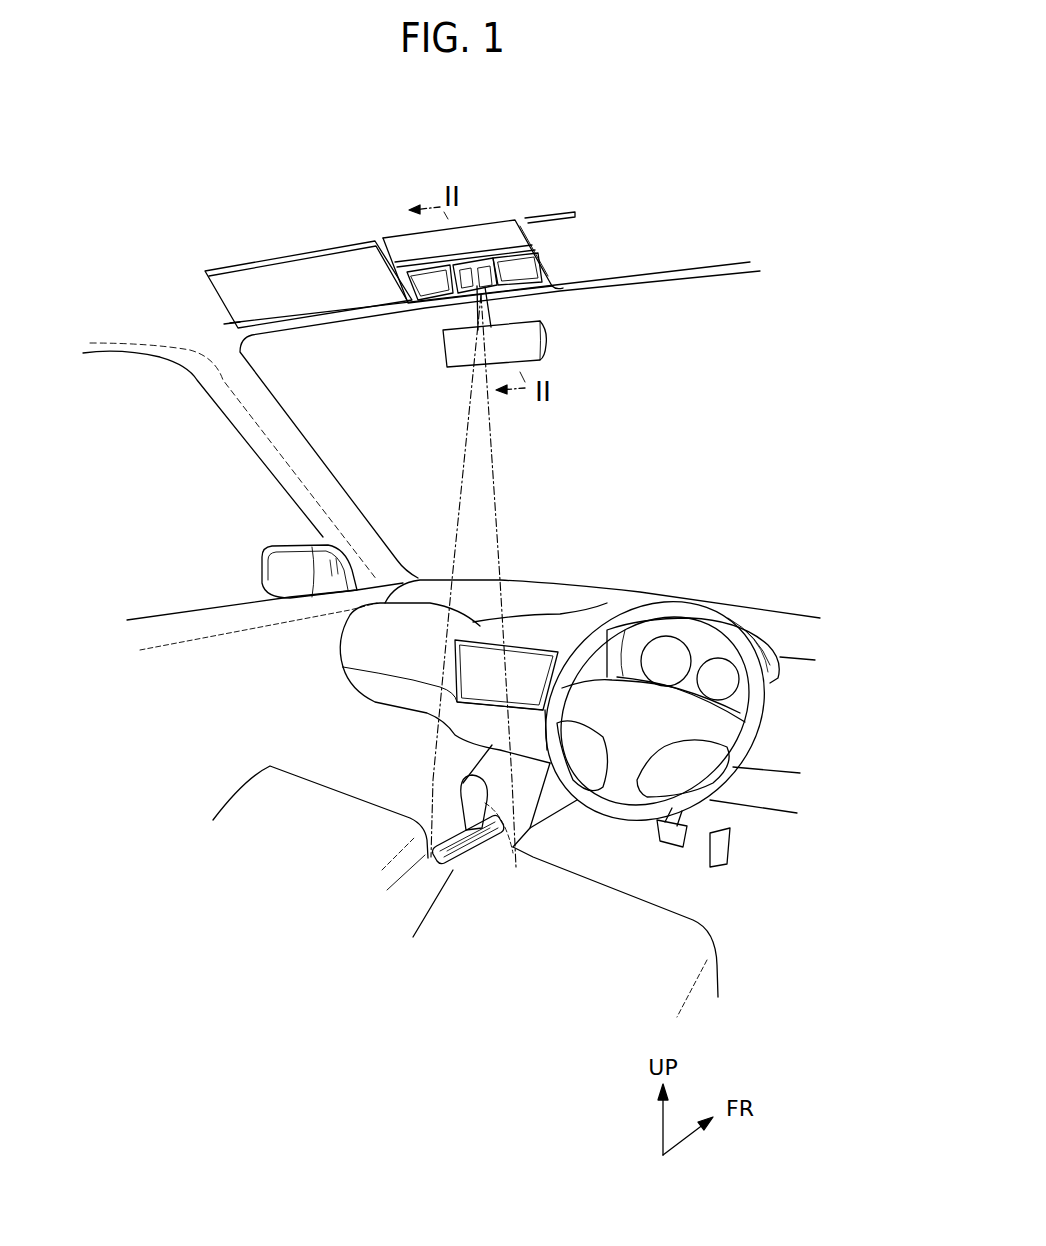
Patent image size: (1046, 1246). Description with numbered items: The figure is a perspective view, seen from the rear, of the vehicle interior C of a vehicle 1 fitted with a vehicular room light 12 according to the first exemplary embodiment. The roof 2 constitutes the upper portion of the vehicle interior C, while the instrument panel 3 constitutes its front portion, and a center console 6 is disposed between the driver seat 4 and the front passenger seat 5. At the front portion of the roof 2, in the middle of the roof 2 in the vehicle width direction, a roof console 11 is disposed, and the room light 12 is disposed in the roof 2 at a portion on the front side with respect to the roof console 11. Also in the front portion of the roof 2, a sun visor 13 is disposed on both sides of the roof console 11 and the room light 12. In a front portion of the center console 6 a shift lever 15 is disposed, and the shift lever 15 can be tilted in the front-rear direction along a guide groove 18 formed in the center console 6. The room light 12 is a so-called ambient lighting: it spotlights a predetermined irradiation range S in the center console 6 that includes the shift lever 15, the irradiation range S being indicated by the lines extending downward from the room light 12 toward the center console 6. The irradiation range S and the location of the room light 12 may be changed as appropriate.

The vehicle 1 is at (706, 168).
The roof 2 is at (318, 227).
The instrument panel 3 is at (538, 627).
The driver seat 4 is at (670, 927).
The front passenger seat 5 is at (307, 797).
The center console 6 is at (410, 887).
The roof console 11 is at (396, 237).
The vehicular room light 12 is at (481, 262).
The sun visor 13 is at (272, 281).
The shift lever 15 is at (513, 853).
The guide groove 18 is at (453, 867).
The irradiation range S is at (492, 468).
The vehicle interior C is at (182, 705).